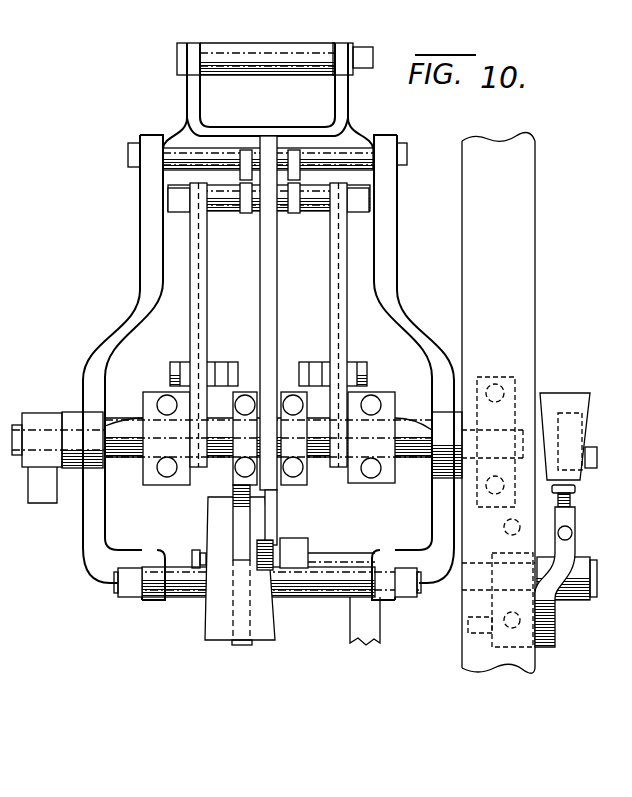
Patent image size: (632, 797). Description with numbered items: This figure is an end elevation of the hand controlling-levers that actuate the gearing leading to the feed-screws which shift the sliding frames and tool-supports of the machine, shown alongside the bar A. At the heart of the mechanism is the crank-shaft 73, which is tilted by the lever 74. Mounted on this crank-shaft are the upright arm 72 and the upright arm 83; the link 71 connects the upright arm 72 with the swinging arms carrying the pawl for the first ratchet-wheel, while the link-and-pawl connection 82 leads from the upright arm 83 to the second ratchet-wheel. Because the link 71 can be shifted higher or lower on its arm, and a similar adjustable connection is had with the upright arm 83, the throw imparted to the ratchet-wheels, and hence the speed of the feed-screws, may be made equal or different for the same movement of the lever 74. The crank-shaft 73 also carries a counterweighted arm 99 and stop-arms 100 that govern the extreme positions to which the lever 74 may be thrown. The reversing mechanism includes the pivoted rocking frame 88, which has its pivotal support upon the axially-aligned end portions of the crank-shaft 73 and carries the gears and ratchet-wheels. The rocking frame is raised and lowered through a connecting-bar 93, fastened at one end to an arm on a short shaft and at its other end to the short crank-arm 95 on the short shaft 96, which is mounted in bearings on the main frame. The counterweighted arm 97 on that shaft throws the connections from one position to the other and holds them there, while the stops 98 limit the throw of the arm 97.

The bar A is at (498, 402).
The link 71 is at (214, 361).
The upright arm 72 is at (212, 258).
The crank-shaft 73 is at (140, 453).
The lever 74 is at (278, 295).
The link-and-pawl connection 82 is at (316, 361).
The upright arm 83 is at (330, 258).
The rocking frame 88 is at (105, 413).
The connecting-bar 93 is at (283, 568).
The short crank-arm 95 is at (304, 553).
The short shaft 96 is at (590, 582).
The counterweighted arm 97 is at (580, 518).
The stops 98 is at (575, 495).
The counterweighted arm 99 is at (250, 511).
The stop-arms 100 is at (278, 546).